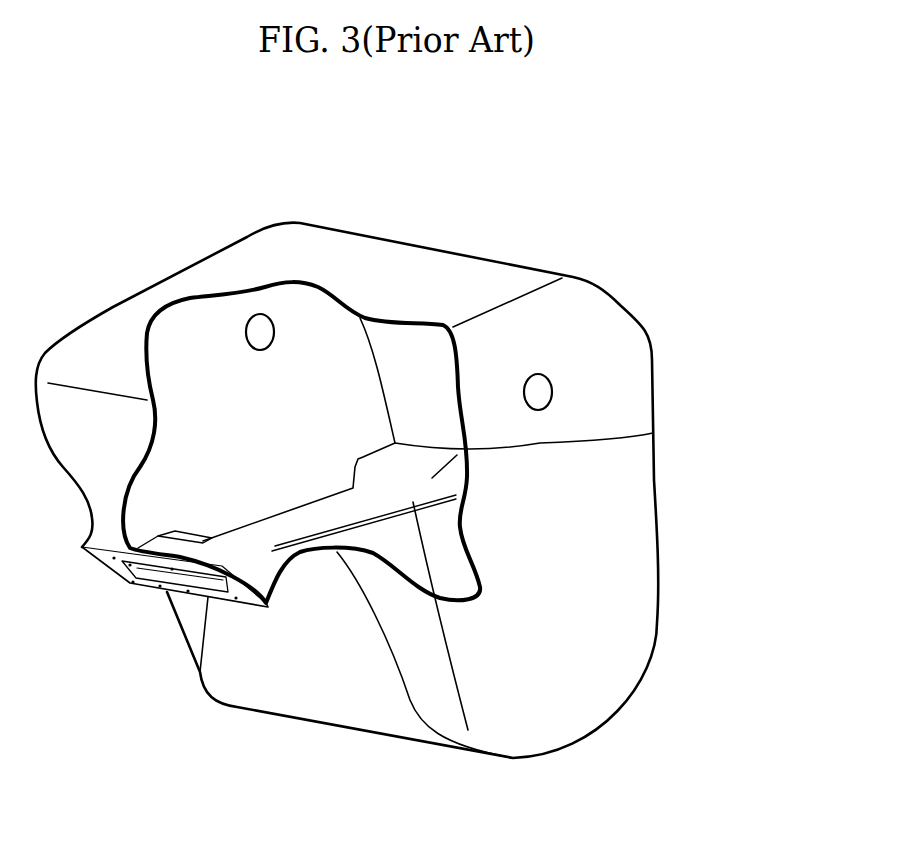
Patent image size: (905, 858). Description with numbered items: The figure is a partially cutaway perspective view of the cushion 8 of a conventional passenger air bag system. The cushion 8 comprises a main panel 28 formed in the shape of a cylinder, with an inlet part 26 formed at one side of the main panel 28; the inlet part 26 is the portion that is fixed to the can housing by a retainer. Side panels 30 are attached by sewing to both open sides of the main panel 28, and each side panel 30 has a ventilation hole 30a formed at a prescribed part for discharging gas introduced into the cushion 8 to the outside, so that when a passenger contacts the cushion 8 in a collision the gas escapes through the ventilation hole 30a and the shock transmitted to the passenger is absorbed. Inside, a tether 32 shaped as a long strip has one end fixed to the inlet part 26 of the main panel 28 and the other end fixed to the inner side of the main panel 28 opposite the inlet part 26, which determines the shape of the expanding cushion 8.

The cushion 8 is at (394, 214).
The inlet part 26 is at (127, 573).
The main panel 28 is at (403, 260).
The side panel 30 is at (618, 543).
The ventilation hole 30a is at (535, 398).
The tether 32 is at (655, 432).